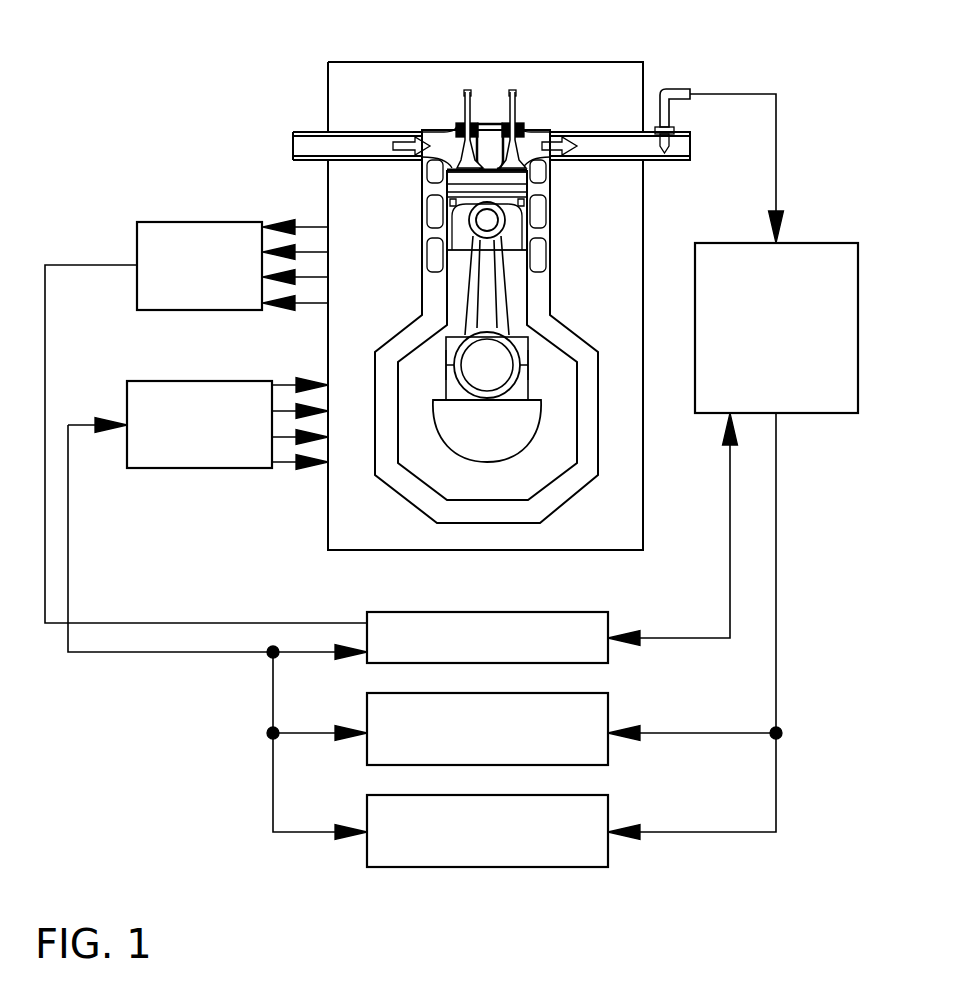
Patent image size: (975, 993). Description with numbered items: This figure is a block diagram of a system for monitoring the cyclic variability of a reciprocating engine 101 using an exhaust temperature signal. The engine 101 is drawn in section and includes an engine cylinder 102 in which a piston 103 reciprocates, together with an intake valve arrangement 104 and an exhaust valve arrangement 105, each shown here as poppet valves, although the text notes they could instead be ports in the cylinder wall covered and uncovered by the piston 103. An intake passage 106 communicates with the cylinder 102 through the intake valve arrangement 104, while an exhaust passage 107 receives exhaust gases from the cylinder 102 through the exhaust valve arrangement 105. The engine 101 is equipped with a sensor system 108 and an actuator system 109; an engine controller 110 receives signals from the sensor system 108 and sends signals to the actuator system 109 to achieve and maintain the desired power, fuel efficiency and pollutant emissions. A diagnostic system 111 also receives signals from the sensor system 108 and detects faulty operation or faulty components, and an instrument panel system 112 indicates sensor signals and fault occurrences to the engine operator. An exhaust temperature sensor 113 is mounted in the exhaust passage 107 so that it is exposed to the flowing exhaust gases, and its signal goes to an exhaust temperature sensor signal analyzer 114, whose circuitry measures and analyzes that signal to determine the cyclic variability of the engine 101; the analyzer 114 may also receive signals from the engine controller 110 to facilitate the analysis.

The reciprocating engine 101 is at (344, 62).
The engine cylinder 102 is at (528, 296).
The piston 103 is at (473, 205).
The intake valve arrangement 104 is at (457, 172).
The exhaust valve arrangement 105 is at (515, 172).
The intake passage 106 is at (340, 147).
The exhaust passage 107 is at (634, 147).
The sensor system 108 is at (199, 222).
The actuator system 109 is at (199, 381).
The engine controller 110 is at (580, 612).
The diagnostic system 111 is at (580, 693).
The instrument panel system 112 is at (580, 795).
The exhaust temperature sensor 113 is at (678, 88).
The exhaust temperature sensor signal analyzer 114 is at (798, 243).